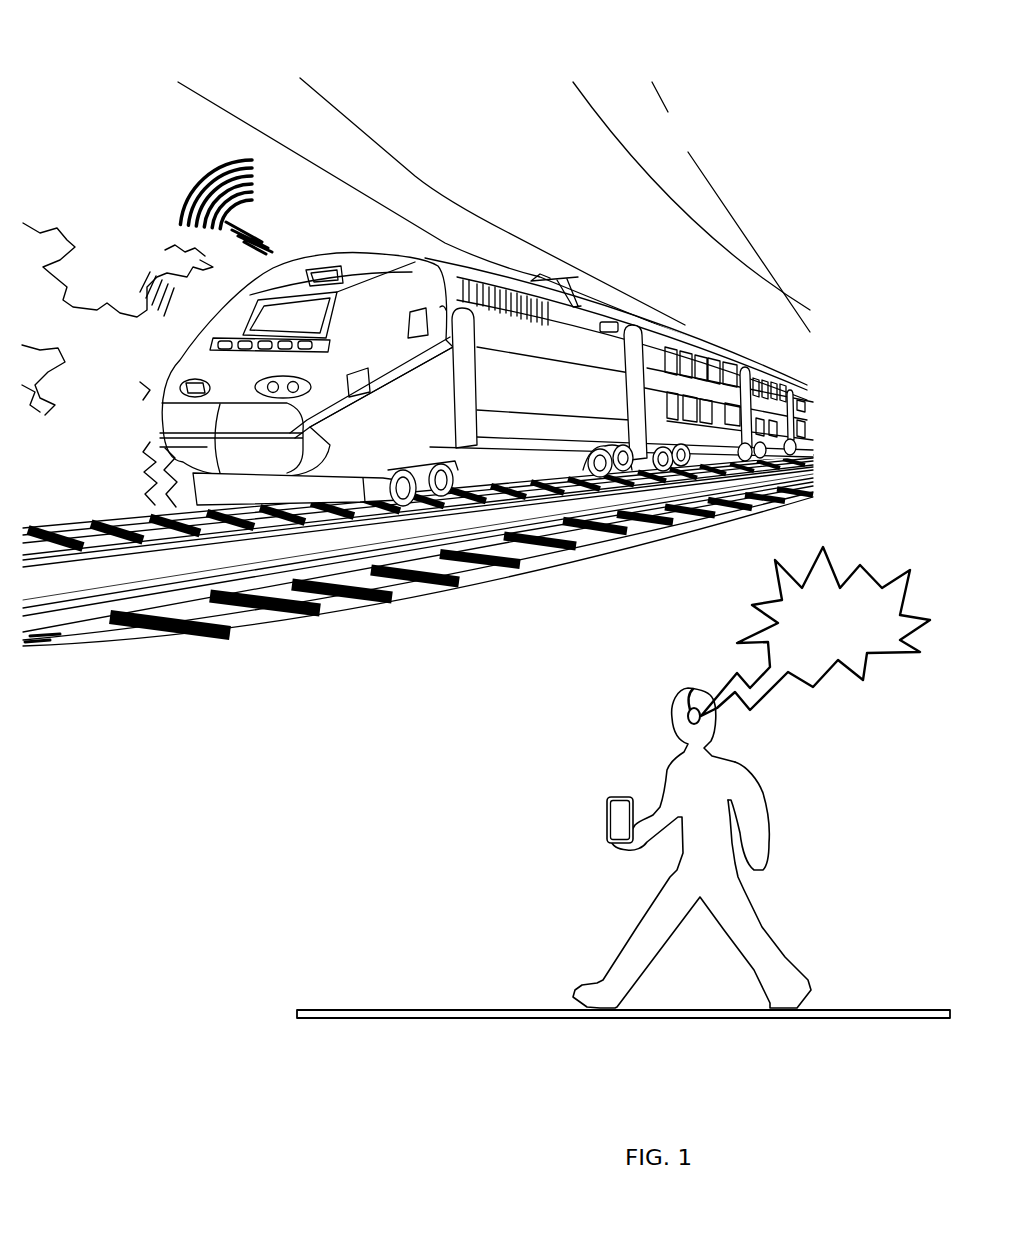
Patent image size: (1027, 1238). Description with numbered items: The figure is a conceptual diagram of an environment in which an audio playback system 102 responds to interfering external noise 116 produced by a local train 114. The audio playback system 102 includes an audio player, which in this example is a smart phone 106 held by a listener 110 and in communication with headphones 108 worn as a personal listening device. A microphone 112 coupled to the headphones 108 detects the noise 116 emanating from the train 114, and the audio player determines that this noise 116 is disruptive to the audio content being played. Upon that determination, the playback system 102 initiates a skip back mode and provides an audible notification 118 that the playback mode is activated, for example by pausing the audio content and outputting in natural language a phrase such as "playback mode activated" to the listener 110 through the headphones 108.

The audio playback system 102 is at (587, 687).
The mobile device 106 is at (608, 843).
The headphones 108 is at (690, 712).
The listener 110 is at (769, 807).
The microphone 112 is at (702, 716).
The train 114 is at (811, 385).
The noise 116 is at (193, 183).
The audible notification 118 is at (827, 550).